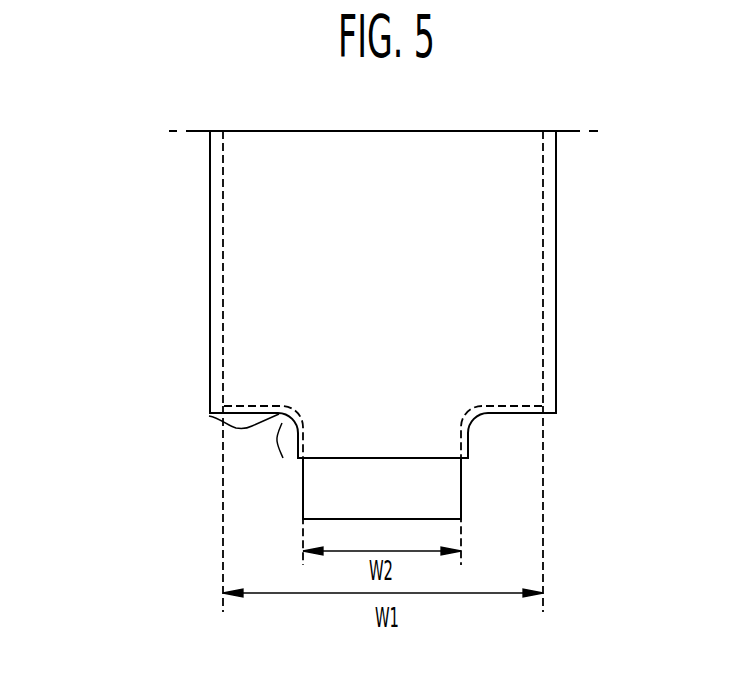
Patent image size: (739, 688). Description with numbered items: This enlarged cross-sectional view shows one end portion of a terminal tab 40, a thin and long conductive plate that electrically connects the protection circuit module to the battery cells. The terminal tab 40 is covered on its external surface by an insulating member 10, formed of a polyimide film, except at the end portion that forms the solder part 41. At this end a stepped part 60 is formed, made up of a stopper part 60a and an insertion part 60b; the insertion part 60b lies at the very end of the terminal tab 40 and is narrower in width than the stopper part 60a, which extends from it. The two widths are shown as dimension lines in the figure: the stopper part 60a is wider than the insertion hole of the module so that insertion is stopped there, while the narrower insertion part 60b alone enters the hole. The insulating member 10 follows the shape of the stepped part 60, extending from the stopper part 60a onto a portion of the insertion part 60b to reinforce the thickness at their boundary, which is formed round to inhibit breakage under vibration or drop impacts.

The insulating member 10 is at (548, 352).
The terminal tab 40 is at (492, 257).
The solder part 41 is at (461, 490).
The stepped part 60 is at (175, 455).
The stopper part 60a is at (243, 433).
The insertion part 60b is at (277, 440).